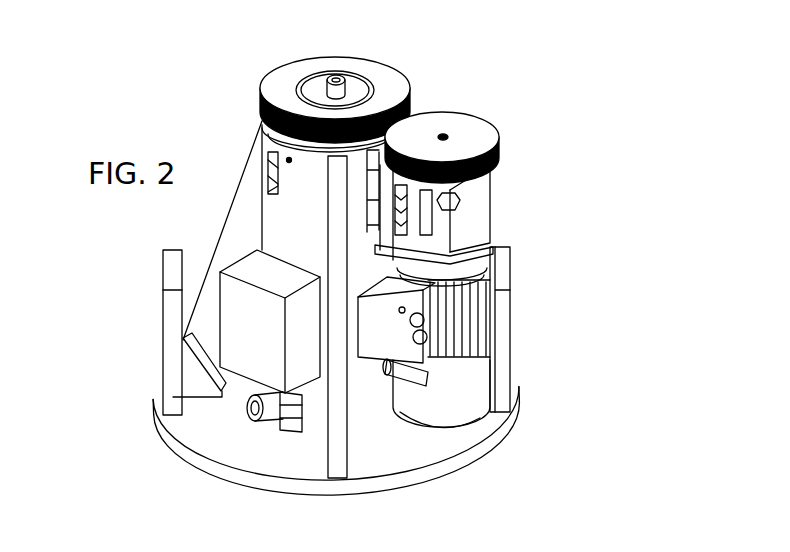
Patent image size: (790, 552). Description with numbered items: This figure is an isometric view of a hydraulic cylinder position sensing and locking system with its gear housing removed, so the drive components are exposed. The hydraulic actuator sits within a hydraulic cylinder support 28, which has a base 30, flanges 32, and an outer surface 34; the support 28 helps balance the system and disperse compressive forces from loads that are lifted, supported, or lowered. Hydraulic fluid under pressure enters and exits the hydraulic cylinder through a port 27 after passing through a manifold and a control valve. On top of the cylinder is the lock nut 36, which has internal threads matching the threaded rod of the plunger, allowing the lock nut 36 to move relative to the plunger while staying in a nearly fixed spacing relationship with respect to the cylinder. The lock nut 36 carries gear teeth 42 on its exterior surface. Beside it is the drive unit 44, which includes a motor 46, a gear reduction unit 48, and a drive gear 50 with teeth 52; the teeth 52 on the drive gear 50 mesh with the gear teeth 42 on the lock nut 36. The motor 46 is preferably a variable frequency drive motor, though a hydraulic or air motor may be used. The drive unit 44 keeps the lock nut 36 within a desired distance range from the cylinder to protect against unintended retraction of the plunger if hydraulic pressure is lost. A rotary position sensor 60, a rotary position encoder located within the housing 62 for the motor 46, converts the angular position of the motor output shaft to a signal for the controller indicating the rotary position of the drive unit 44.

The port 27 is at (247, 423).
The hydraulic cylinder support 28 is at (290, 222).
The base 30 is at (298, 460).
The flanges 32 is at (232, 243).
The outer surface 34 is at (293, 201).
The lock nut 36 is at (373, 72).
The gear teeth 42 is at (262, 121).
The drive unit 44 is at (508, 268).
The motor 46 is at (462, 383).
The gear reduction unit 48 is at (473, 210).
The drive gear 50 is at (470, 130).
The teeth 52 is at (497, 150).
The rotary position sensor 60 is at (460, 430).
The housing 62 is at (440, 402).